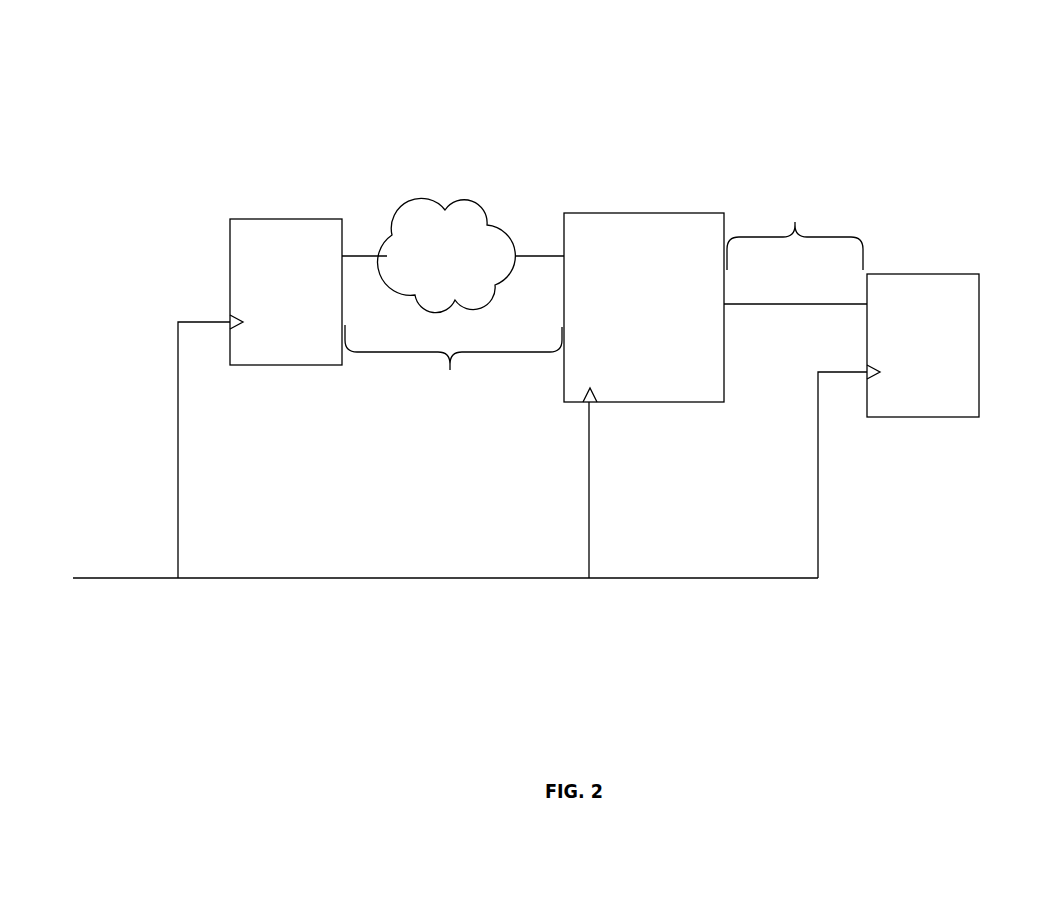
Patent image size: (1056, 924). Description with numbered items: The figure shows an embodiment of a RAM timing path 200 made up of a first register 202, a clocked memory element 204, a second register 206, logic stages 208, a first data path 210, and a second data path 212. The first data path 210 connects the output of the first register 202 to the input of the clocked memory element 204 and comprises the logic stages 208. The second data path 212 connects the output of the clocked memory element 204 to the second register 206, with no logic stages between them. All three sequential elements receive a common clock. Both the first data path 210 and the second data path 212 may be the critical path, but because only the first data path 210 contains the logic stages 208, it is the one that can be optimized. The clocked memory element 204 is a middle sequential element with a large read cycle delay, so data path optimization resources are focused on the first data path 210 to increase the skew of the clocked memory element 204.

The RAM timing path 200 is at (963, 93).
The first register 202 is at (243, 218).
The clocked memory element 204 is at (603, 213).
The second register 206 is at (953, 273).
The logic stages 208 is at (423, 195).
The first data path 210 is at (453, 367).
The second data path 212 is at (795, 275).